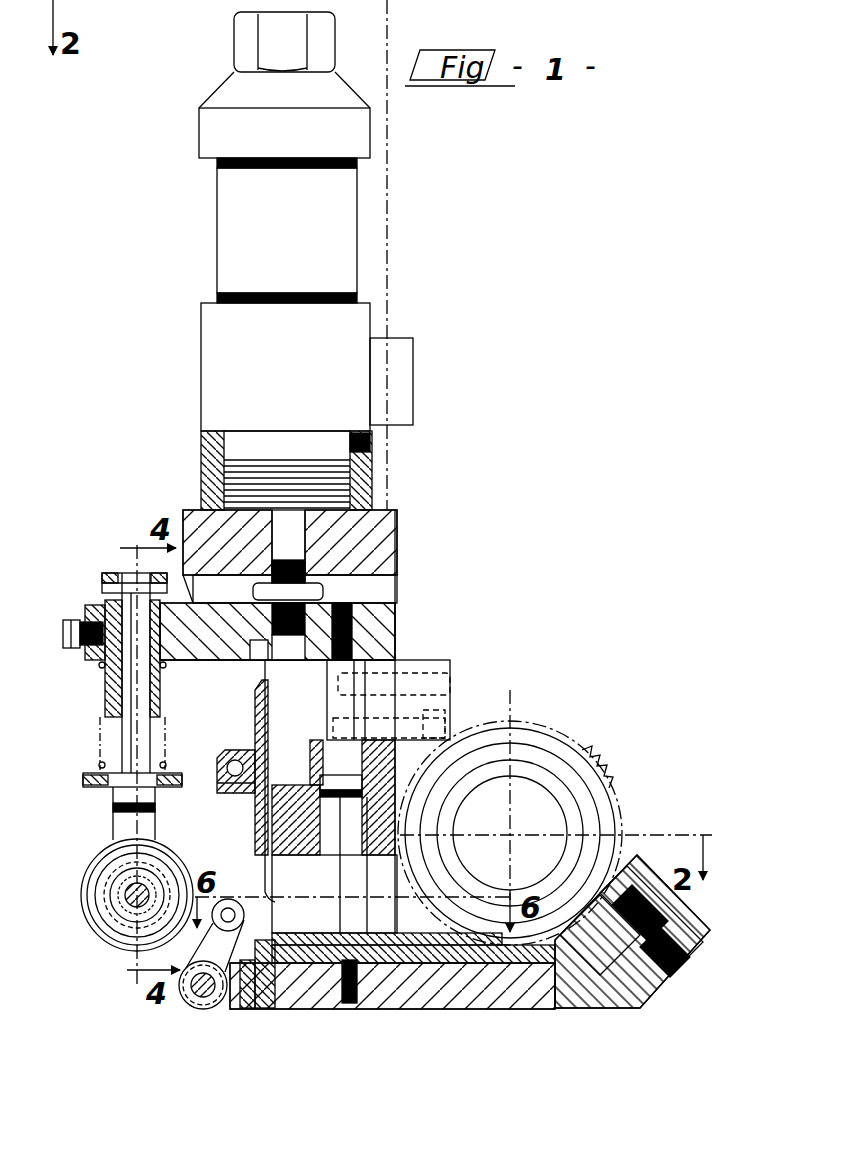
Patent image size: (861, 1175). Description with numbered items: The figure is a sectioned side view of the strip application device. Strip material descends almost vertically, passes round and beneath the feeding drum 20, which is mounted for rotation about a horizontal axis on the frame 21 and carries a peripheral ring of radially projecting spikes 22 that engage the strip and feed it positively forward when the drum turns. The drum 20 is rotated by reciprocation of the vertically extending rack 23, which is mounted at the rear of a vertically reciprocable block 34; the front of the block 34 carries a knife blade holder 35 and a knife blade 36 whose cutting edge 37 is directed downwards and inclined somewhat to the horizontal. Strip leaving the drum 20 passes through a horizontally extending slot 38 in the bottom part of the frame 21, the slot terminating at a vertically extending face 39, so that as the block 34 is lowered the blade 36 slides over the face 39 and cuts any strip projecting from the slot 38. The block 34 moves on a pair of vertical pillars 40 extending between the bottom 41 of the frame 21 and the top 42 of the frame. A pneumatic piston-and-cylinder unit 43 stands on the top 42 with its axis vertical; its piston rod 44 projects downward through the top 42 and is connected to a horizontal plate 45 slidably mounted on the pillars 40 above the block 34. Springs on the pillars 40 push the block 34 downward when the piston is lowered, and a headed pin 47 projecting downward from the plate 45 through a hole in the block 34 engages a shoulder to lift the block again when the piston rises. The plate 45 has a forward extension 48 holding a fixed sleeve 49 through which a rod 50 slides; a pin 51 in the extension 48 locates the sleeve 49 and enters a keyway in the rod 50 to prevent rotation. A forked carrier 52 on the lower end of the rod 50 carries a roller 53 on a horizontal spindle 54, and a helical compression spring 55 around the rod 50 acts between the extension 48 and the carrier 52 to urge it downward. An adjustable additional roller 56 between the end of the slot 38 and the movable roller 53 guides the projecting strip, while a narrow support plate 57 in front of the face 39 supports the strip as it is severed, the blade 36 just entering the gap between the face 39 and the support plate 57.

The feeding drum 20 is at (527, 738).
The frame 21 is at (256, 668).
The spikes 22 is at (592, 753).
The rack 23 is at (455, 735).
The block 34 is at (290, 785).
The knife blade holder 35 is at (256, 728).
The knife blade 36 is at (262, 868).
The cutting edge 37 is at (272, 872).
The slot 38 is at (408, 963).
The vertically extending face 39 is at (268, 938).
The pillars 40 is at (365, 962).
The bottom of the frame 41 is at (485, 1009).
The top of the frame 42 is at (380, 547).
The pneumatic piston-and-cylinder unit 43 is at (343, 258).
The piston rod 44 is at (295, 528).
The horizontal plate 45 is at (380, 628).
The headed pin 47 is at (333, 706).
The forward extension 48 is at (102, 600).
The sleeve 49 is at (108, 700).
The rod 50 is at (130, 735).
The pin 51 is at (68, 642).
The forked carrier 52 is at (125, 828).
The roller 53 is at (81, 895).
The spindle 54 is at (130, 903).
The helical compression spring 55 is at (98, 762).
The additional roller 56 is at (205, 1009).
The support plate 57 is at (262, 1010).